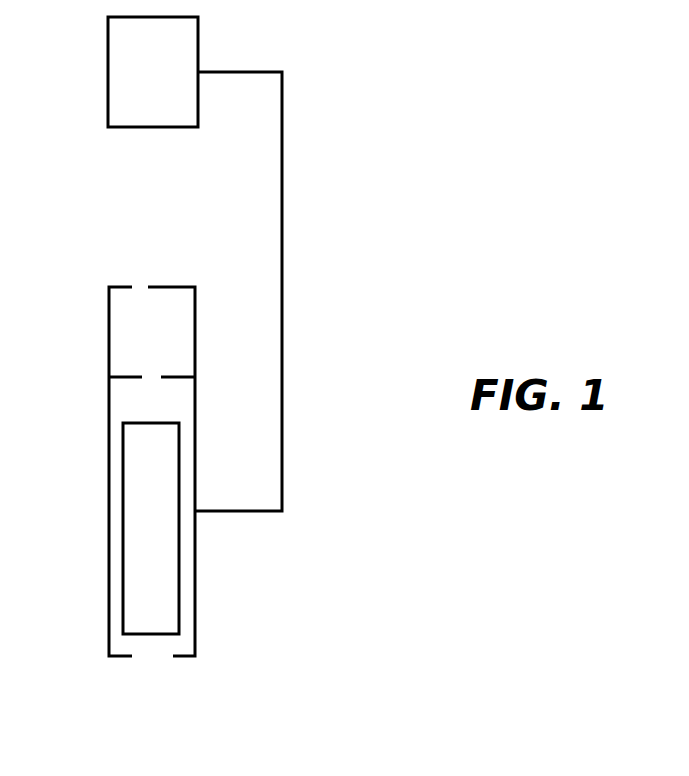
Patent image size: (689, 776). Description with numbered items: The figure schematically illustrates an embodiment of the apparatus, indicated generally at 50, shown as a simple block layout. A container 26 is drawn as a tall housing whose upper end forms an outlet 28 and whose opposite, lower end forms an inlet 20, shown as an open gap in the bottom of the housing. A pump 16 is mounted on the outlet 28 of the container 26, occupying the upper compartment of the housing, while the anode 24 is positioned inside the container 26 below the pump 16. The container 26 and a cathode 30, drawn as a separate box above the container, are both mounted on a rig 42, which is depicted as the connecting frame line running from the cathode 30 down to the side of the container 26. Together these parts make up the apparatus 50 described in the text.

The system 50 is at (350, 122).
The cathode 30 is at (166, 84).
The rig 42 is at (282, 297).
The outlet 28 is at (108, 342).
The pump 16 is at (166, 339).
The container 26 is at (108, 523).
The anode 24 is at (167, 542).
The inlet 20 is at (142, 658).